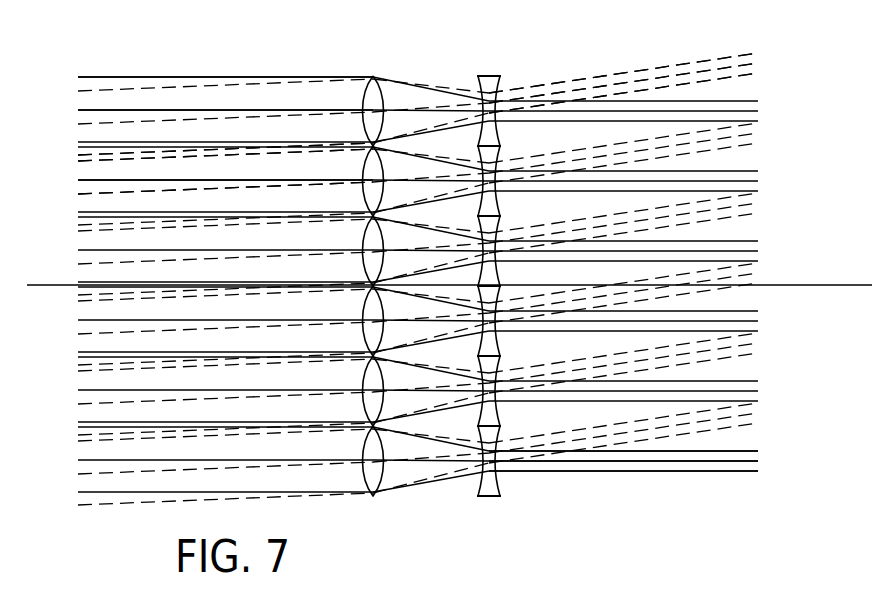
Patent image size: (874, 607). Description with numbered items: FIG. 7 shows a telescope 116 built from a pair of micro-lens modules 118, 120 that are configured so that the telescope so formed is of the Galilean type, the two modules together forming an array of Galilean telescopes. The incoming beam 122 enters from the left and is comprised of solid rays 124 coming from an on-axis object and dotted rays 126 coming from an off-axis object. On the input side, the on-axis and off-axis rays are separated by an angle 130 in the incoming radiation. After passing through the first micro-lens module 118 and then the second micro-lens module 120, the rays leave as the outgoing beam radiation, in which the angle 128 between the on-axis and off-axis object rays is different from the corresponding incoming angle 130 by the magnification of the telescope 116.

The telescope 116 is at (699, 478).
The micro-lens module 118 is at (367, 96).
The micro-lens module 120 is at (484, 77).
The incoming beam 122 is at (190, 75).
The solid rays 124 is at (79, 110).
The dotted rays 126 is at (80, 157).
The angle 130 is at (116, 170).
The angle 128 is at (731, 76).